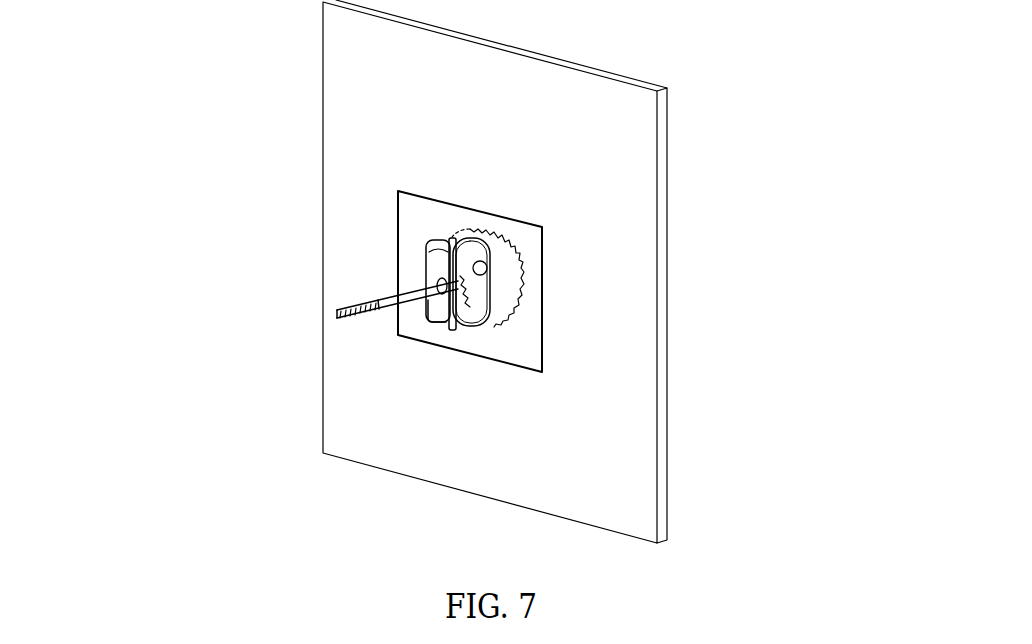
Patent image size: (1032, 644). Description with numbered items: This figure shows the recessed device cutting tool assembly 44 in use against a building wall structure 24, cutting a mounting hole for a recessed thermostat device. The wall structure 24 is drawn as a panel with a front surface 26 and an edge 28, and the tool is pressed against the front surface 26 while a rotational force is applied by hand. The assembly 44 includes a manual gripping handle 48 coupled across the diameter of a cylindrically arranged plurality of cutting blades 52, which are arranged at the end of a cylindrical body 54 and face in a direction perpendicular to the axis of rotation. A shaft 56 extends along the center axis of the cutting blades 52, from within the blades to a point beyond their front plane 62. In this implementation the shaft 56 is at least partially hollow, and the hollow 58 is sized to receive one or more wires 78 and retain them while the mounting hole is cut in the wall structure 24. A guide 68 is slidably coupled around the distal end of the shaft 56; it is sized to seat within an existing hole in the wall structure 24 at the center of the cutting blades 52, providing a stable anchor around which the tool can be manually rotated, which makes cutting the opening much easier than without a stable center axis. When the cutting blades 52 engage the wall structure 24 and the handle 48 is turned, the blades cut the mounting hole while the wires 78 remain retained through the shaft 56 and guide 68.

The building wall structure 24 is at (551, 271).
The front surface 26 is at (627, 146).
The panel edge 28 is at (670, 162).
The recessed device cutting tool assembly 44 is at (479, 224).
The manual gripping handle 48 is at (442, 315).
The cutting blades 52 is at (513, 253).
The cylindrical body 54 is at (497, 313).
The shaft 56 is at (461, 285).
The hollow 58 is at (440, 306).
The front plane 62 is at (610, 278).
The guide 68 is at (465, 312).
The wires 78 is at (385, 303).